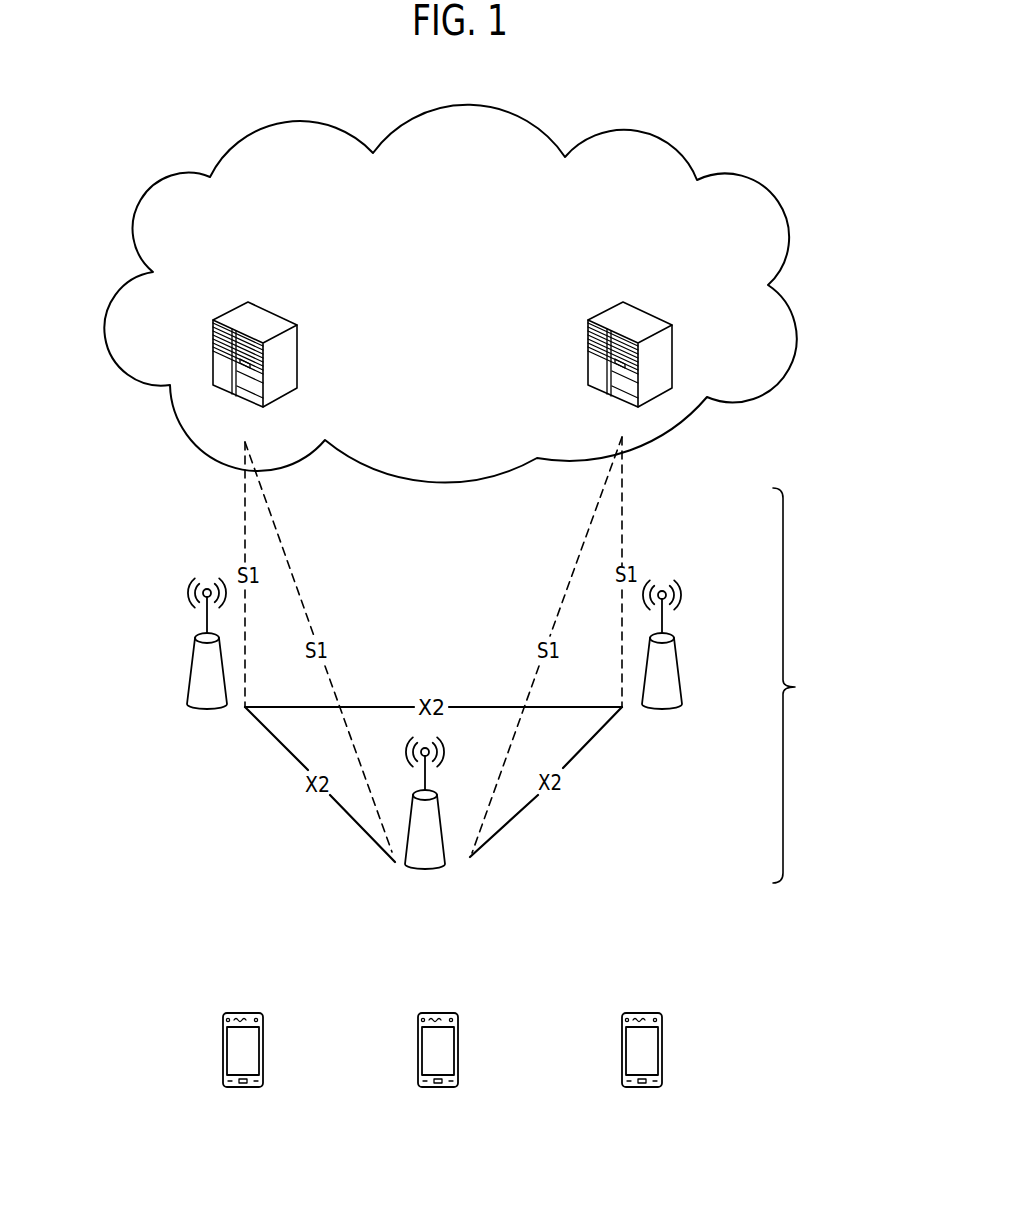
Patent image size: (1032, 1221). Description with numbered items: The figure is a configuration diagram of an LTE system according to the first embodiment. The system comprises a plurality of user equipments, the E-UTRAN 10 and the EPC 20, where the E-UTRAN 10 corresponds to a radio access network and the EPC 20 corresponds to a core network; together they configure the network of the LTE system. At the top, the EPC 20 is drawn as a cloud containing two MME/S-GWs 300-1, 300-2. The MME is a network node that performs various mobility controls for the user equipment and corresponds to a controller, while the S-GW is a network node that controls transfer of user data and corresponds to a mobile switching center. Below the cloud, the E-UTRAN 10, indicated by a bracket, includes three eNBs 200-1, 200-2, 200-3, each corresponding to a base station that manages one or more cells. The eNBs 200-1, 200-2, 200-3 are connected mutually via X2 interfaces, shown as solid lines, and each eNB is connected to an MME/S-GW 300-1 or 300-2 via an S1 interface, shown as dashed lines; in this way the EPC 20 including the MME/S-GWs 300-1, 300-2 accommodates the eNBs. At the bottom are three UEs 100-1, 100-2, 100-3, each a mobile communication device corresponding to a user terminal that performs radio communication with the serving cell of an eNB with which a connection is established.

The EPC 20 is at (673, 142).
The MME/S-GW 300-1 is at (280, 313).
The MME/S-GW 300-2 is at (647, 312).
The eNB 200-1 is at (190, 673).
The eNB 200-2 is at (443, 840).
The eNB 200-3 is at (675, 651).
The E-UTRAN 10 is at (836, 685).
The UE 100-1 is at (255, 1013).
The UE 100-2 is at (440, 1013).
The UE 100-3 is at (645, 1013).